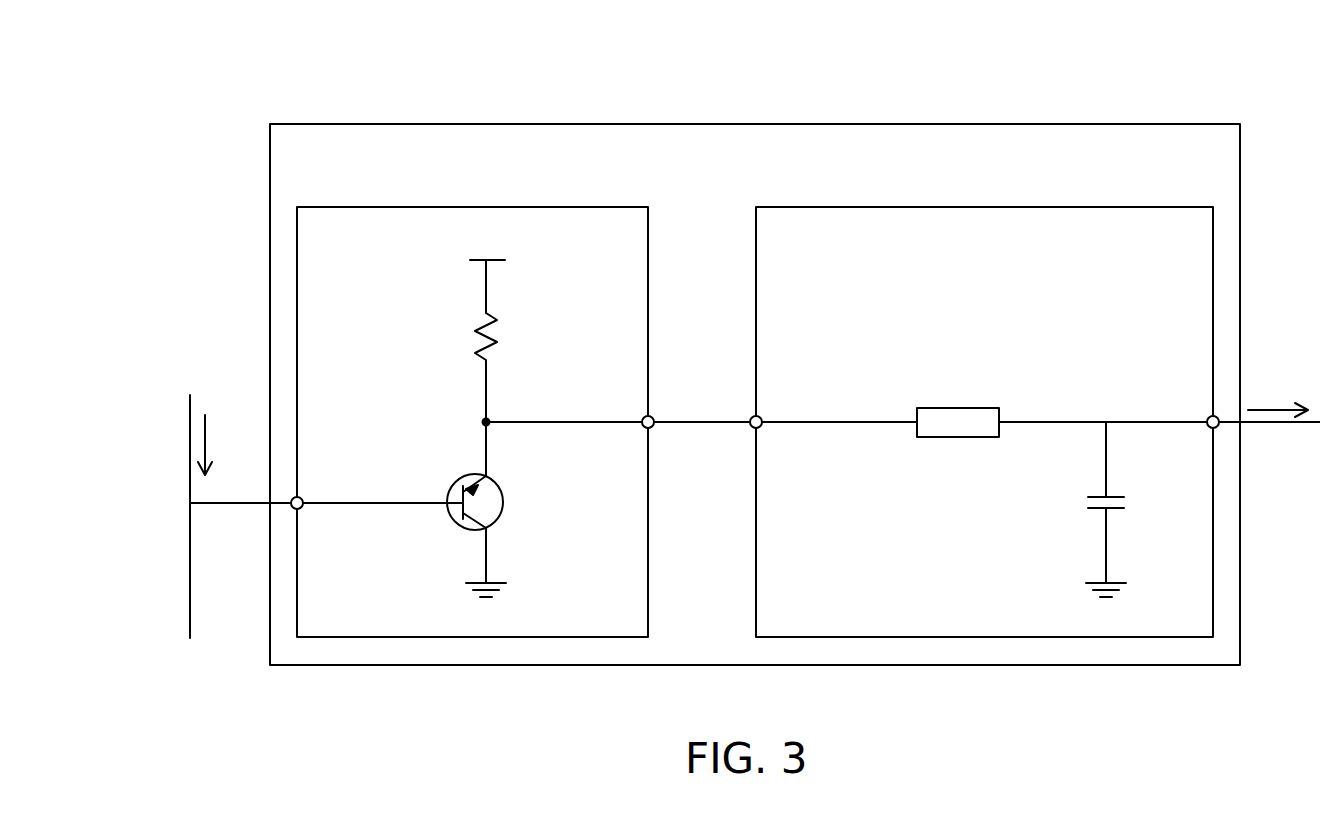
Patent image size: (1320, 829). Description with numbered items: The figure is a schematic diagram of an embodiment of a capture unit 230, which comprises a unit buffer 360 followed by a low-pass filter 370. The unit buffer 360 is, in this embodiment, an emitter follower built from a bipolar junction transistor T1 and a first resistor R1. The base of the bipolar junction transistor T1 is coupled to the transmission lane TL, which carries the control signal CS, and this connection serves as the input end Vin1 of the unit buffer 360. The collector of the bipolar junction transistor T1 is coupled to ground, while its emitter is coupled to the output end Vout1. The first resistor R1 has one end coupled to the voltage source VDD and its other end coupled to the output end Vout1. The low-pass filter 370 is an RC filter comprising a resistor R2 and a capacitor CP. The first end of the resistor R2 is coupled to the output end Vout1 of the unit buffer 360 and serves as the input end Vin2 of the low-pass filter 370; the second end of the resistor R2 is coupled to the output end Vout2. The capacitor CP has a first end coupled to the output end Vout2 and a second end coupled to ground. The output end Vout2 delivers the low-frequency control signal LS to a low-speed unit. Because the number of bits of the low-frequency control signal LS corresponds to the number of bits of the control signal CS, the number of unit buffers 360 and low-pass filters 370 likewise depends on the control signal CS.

The capture unit 230 is at (752, 124).
The unit buffer 360 is at (470, 207).
The low-pass filter 370 is at (982, 207).
The transmission lane TL is at (190, 573).
The control signal CS is at (221, 445).
The input end Vin1 is at (325, 490).
The voltage source VDD is at (484, 270).
The first resistor R1 is at (497, 345).
The bipolar junction transistor T1 is at (505, 504).
The output end Vout1 is at (611, 409).
The input end Vin2 is at (783, 409).
The resistor R2 is at (952, 408).
The capacitor CP is at (1128, 503).
The output end Vout2 is at (1176, 410).
The low-frequency control signal LS is at (1278, 399).